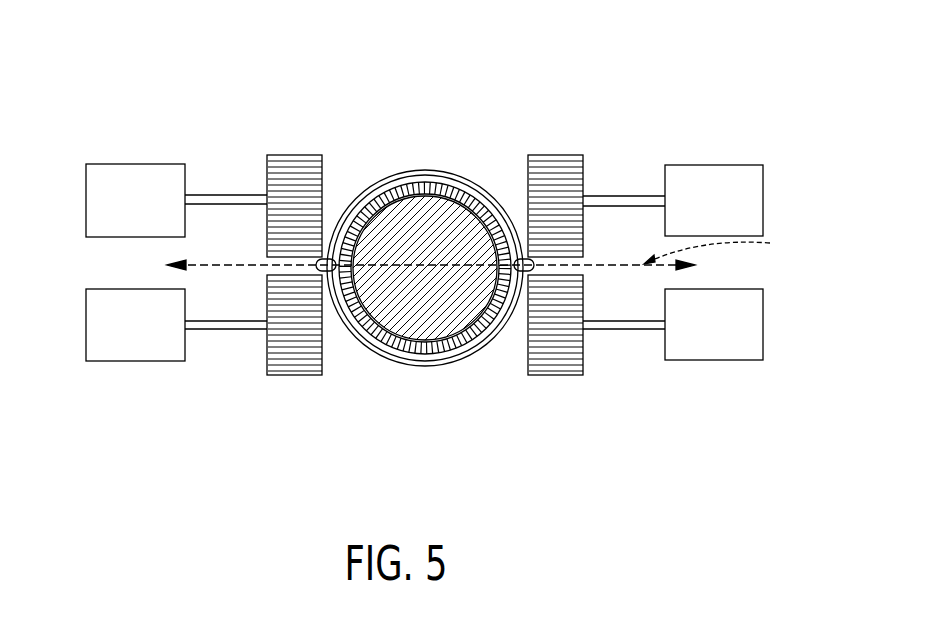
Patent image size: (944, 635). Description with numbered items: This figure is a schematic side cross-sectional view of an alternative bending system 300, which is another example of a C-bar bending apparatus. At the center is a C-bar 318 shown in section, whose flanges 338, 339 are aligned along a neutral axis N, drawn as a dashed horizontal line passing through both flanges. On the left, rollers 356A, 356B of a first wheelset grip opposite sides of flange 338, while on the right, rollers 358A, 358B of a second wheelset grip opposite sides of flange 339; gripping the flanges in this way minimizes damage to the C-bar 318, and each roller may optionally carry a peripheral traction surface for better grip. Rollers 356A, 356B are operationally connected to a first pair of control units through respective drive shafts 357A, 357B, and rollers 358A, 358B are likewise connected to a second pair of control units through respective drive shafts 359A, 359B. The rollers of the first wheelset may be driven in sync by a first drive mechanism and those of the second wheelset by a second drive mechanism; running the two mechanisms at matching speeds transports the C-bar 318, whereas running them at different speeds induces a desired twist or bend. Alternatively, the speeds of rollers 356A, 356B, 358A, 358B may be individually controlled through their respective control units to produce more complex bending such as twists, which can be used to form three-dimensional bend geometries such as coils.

The bending system 300 is at (141, 102).
The C-bar 318 is at (410, 188).
The flange 338 is at (323, 297).
The flange 339 is at (527, 297).
The roller 356A is at (293, 366).
The roller 356B is at (292, 163).
The drive shaft 357A is at (228, 330).
The drive shaft 357B is at (215, 194).
The roller 358A is at (557, 364).
The roller 358B is at (557, 163).
The drive shaft 359A is at (655, 331).
The drive shaft 359B is at (617, 195).